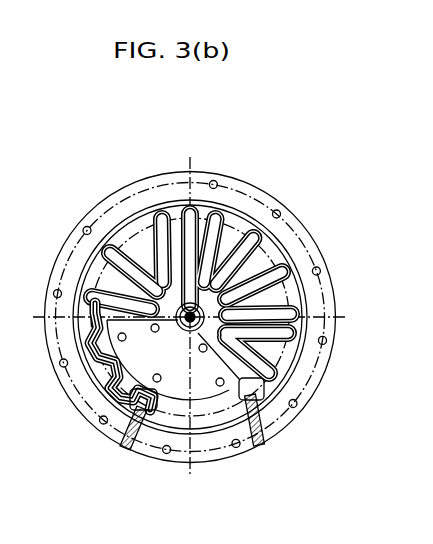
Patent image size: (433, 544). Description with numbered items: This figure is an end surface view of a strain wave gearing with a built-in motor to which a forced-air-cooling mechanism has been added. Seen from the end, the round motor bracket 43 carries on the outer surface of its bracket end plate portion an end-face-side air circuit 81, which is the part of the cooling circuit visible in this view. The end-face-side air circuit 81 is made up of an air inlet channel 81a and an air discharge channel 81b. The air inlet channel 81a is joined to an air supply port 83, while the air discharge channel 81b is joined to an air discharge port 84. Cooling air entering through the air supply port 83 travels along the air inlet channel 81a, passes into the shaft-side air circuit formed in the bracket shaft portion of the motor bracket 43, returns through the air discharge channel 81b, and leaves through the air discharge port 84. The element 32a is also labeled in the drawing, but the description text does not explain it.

The motor bracket 43 is at (108, 186).
The end-face-side air circuit 81 is at (153, 317).
The air inlet channel 81a is at (96, 385).
The air discharge channel 81b is at (300, 336).
The plate portion 32a is at (120, 360).
The air supply port 83 is at (121, 450).
The air discharge port 84 is at (258, 452).